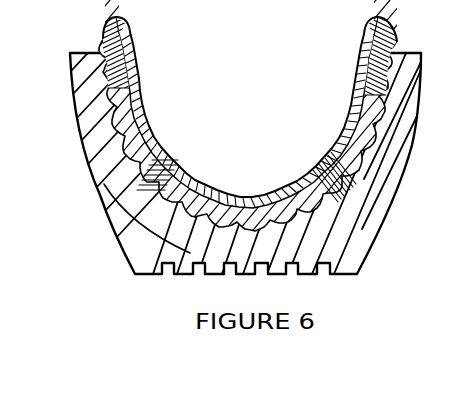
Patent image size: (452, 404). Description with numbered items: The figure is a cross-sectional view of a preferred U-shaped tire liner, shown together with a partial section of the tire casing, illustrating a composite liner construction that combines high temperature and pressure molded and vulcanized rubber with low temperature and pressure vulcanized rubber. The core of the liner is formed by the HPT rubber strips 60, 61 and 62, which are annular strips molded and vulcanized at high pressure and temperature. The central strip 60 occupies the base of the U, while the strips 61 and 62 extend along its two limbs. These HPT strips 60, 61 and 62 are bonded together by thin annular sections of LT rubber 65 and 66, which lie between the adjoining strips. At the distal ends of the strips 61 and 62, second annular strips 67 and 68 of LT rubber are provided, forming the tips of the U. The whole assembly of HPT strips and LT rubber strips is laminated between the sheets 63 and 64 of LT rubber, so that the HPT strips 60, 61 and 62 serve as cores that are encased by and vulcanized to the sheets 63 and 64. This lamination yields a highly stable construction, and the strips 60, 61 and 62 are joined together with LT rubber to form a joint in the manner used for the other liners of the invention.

The HPT rubber strip 60 is at (125, 213).
The HPT rubber strip 61 is at (120, 114).
The HPT rubber strip 62 is at (366, 122).
The sheet of LT rubber 63 is at (106, 145).
The sheet of LT rubber 64 is at (104, 184).
The thin annular section of LT rubber 65 is at (330, 185).
The thin annular section of LT rubber 66 is at (160, 176).
The second annular strip of LT rubber 67 is at (120, 54).
The second annular strip of LT rubber 68 is at (377, 72).